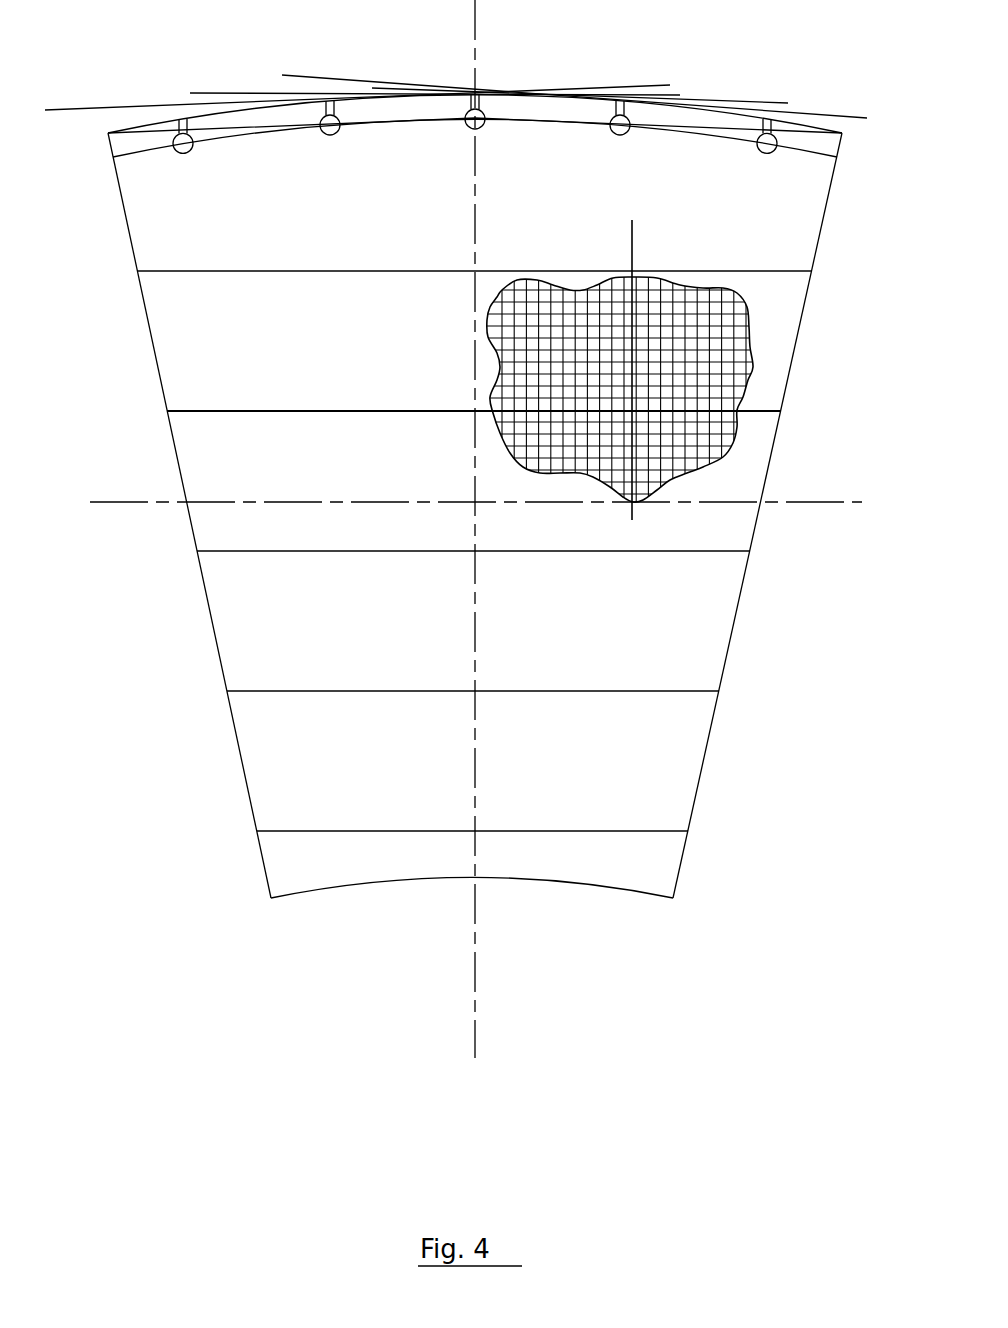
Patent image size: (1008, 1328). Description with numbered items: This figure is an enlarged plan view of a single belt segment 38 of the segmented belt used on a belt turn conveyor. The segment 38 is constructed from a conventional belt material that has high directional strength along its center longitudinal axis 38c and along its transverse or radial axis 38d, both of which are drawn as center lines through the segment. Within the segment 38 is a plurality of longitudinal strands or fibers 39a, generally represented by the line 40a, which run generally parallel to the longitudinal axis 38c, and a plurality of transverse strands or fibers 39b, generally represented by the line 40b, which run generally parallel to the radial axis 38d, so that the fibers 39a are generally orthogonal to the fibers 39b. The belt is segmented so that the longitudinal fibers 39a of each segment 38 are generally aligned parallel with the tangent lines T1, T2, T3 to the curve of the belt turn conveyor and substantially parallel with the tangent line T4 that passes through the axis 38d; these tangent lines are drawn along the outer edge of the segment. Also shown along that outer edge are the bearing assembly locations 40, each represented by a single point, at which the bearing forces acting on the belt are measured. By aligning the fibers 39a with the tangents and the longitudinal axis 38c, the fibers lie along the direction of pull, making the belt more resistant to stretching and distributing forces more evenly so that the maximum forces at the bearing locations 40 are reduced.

The belt segment 38 is at (618, 910).
The longitudinal axis 38c is at (843, 500).
The transverse axis 38d is at (475, 1030).
The longitudinal strands or fibers 39a is at (738, 340).
The transverse strands or fibers 39b is at (690, 298).
The bearing assembly location 40 is at (122, 98).
The line representing longitudinal fibers 40a is at (762, 408).
The line representing transverse fibers 40b is at (632, 235).
The tangent line T1 is at (840, 113).
The tangent line T2 is at (762, 102).
The tangent line T3 is at (646, 83).
The tangent line T4 is at (678, 95).